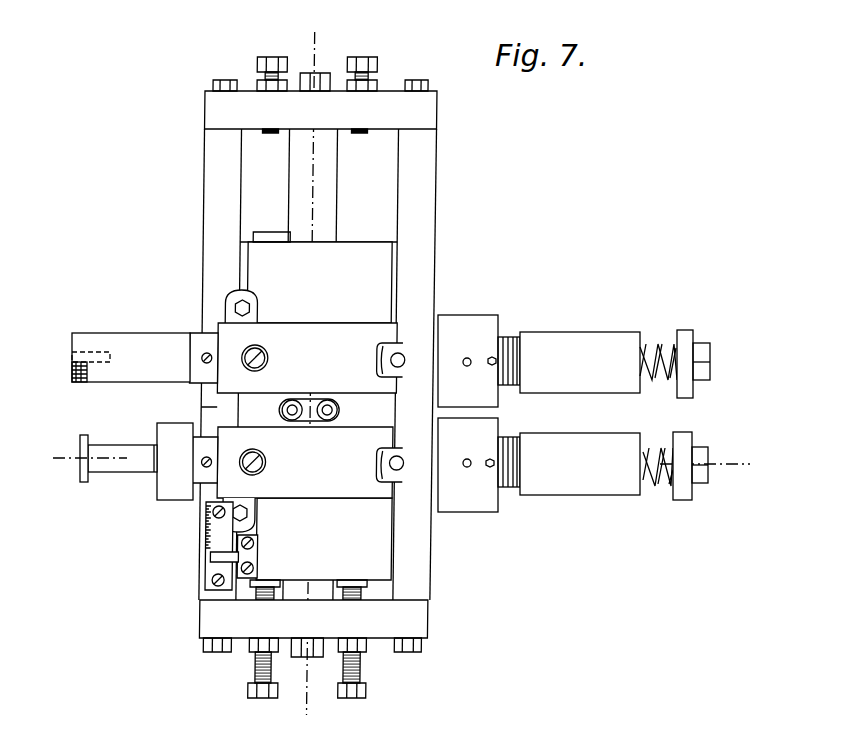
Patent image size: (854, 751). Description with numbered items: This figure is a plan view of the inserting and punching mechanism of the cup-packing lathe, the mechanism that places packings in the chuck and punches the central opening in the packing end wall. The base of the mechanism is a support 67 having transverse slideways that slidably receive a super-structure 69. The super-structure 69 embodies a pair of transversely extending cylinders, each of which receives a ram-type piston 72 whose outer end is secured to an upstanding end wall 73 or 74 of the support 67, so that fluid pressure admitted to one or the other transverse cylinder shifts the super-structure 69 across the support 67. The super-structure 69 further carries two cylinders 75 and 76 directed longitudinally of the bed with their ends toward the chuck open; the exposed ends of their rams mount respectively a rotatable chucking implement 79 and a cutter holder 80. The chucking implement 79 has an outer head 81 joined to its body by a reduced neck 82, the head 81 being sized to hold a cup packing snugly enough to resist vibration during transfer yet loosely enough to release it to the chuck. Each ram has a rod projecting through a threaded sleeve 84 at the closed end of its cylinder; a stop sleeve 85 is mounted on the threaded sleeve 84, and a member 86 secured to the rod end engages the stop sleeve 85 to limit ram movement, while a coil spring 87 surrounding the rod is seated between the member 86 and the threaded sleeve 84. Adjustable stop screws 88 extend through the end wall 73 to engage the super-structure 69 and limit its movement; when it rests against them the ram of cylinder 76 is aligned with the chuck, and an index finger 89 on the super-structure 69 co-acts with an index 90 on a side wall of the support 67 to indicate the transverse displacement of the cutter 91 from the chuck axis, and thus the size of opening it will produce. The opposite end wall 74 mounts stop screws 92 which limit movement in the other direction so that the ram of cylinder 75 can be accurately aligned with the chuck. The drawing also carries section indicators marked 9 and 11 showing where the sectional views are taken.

The support 67 is at (221, 407).
The super-structure 69 is at (374, 273).
The ram-type piston 72 is at (328, 196).
The end wall 73 is at (414, 621).
The end wall 74 is at (418, 112).
The cylinder 75 is at (298, 479).
The cylinder 76 is at (297, 341).
The rotatable chucking implement 79 is at (168, 490).
The cutter holder 80 is at (147, 342).
The head 81 is at (80, 480).
The reduced neck 82 is at (118, 475).
The threaded sleeve 84 is at (515, 388).
The stop sleeve 85 is at (598, 383).
The member 86 is at (687, 397).
The coil spring 87 is at (653, 383).
The adjustable stop screws 88 is at (366, 668).
The index finger 89 is at (224, 558).
The index 90 is at (222, 531).
The cutter 91 is at (68, 358).
The stop screws 92 is at (268, 76).
The section line 9- 9 is at (314, 32).
The section line 11- 11 is at (53, 458).